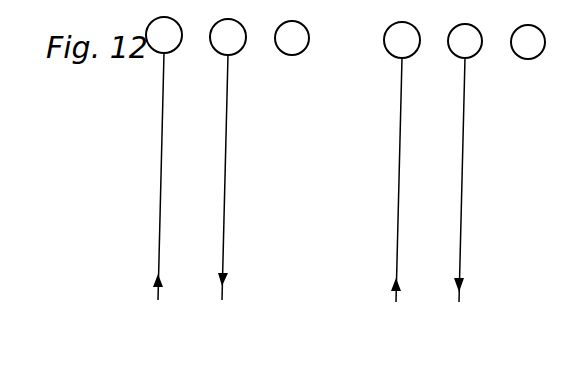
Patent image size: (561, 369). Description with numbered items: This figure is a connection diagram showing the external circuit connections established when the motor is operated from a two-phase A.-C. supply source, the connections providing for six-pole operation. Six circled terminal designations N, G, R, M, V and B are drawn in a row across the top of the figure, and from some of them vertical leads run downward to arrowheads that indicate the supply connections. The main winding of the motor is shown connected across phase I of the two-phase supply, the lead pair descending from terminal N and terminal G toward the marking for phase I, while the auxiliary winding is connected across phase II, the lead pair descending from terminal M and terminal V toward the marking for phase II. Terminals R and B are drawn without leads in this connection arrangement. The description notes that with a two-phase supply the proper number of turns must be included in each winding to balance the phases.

The N terminal N is at (164, 158).
The G terminal G is at (228, 159).
The R terminal R is at (292, 38).
The M terminal M is at (402, 162).
The V terminal V is at (465, 163).
The B terminal B is at (528, 42).
The phase I is at (188, 322).
The phase II is at (422, 325).